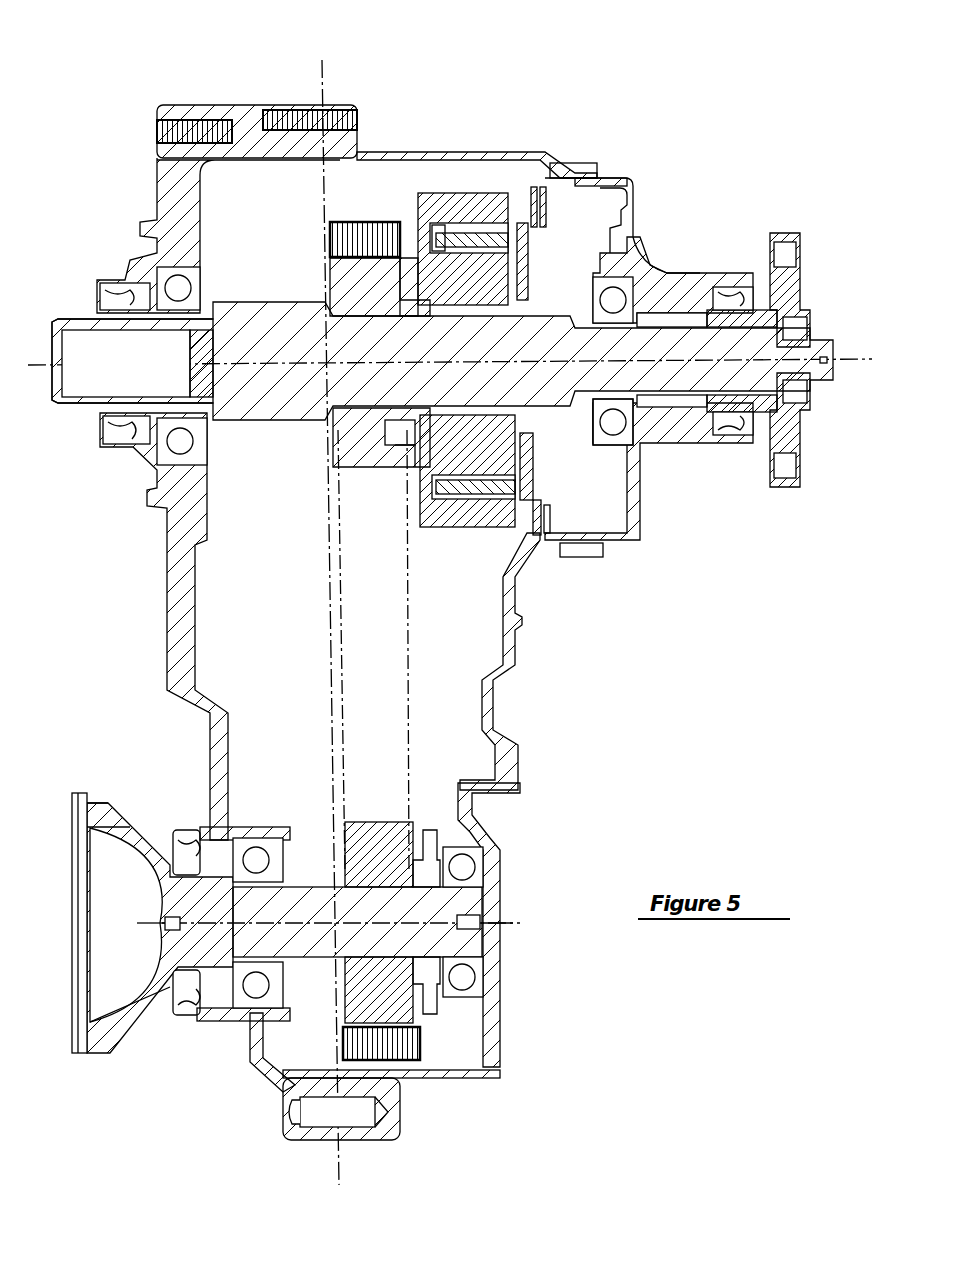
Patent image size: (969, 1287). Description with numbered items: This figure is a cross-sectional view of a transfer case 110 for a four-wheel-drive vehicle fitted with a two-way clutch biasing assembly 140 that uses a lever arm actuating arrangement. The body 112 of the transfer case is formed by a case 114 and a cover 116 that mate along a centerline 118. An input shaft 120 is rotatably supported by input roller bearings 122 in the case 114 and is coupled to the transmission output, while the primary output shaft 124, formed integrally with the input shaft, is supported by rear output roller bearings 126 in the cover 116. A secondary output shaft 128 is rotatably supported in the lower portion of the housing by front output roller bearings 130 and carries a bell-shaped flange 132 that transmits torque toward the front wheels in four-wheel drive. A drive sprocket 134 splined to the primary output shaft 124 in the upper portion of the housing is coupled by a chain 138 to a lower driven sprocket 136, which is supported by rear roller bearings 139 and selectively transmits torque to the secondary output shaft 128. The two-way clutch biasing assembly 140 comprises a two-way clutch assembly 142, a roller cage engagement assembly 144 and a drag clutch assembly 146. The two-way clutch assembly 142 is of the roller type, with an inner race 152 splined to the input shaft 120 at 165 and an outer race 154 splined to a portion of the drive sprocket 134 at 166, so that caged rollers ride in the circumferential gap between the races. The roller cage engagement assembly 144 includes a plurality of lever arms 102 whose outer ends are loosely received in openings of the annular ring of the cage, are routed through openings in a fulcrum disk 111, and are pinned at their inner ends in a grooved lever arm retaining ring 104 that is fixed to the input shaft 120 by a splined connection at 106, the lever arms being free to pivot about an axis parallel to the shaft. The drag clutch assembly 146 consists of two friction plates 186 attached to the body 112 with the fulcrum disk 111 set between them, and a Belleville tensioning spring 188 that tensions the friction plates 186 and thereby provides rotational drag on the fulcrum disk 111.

The transfer case 110 is at (185, 90).
The case 114 is at (258, 105).
The body 112 is at (340, 100).
The cover 116 is at (400, 152).
The centerline 118 is at (320, 183).
The fulcrum disk 111 is at (552, 218).
The friction plates 186 is at (570, 175).
The Belleville tensioning spring 188 is at (542, 185).
The two-way clutch assembly 142 is at (476, 185).
The outer race 154 is at (440, 195).
The roller cage engagement assembly 144 is at (520, 205).
The lever arms 102 is at (552, 248).
The lever arm retaining ring 104 is at (552, 462).
The rear output roller bearings 126 is at (613, 422).
The primary output shaft 124 is at (835, 360).
The splined connection 106 is at (560, 330).
The input shaft 120 is at (55, 410).
The input roller bearings 122 is at (160, 445).
The inner race 152 is at (350, 300).
The splined engagement 165 is at (448, 325).
The drive sprocket 134 is at (333, 440).
The splined engagement 166 is at (398, 465).
The two-way clutch biasing assembly 140 is at (527, 525).
The drag clutch assembly 146 is at (588, 517).
The chain 138 is at (408, 626).
The bell-shaped flange 132 is at (107, 806).
The front output roller bearings 130 is at (260, 857).
The secondary output shaft 128 is at (130, 1025).
The driven sprocket 136 is at (428, 820).
The rear roller bearings 139 is at (488, 867).